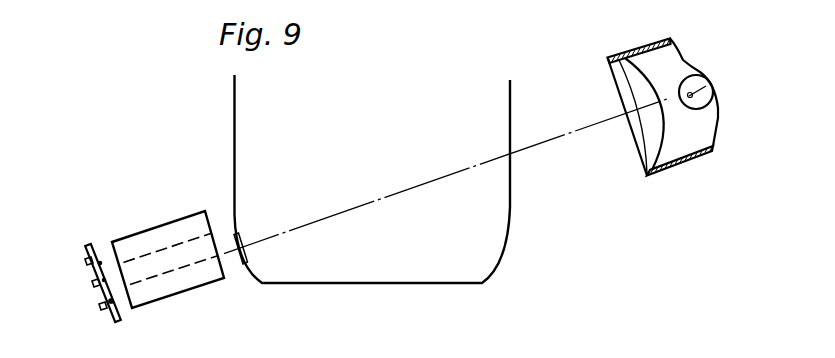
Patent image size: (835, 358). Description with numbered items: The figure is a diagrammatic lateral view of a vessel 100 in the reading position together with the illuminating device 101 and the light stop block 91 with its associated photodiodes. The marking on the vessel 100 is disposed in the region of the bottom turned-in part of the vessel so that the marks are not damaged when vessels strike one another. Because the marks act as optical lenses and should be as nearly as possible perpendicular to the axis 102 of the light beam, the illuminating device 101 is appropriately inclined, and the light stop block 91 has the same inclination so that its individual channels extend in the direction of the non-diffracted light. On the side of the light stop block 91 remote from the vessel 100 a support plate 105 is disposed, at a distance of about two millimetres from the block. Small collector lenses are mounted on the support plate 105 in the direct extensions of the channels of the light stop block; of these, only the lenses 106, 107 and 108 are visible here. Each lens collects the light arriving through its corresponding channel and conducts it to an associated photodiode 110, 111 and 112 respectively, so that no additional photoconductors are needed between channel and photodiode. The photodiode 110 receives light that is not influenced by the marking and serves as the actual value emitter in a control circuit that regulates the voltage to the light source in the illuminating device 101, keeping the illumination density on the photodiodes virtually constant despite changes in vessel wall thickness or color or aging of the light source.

The light stop block 91 is at (178, 226).
The vessel 100 is at (319, 142).
The illuminating device 101 is at (636, 48).
The axis of the light beam 102 is at (565, 136).
The support plate 105 is at (87, 248).
The collector lens 106 is at (100, 262).
The collector lens 107 is at (104, 279).
The collector lens 108 is at (112, 302).
The photodiode 110 is at (85, 262).
The photodiode 111 is at (92, 284).
The photodiode 112 is at (99, 308).